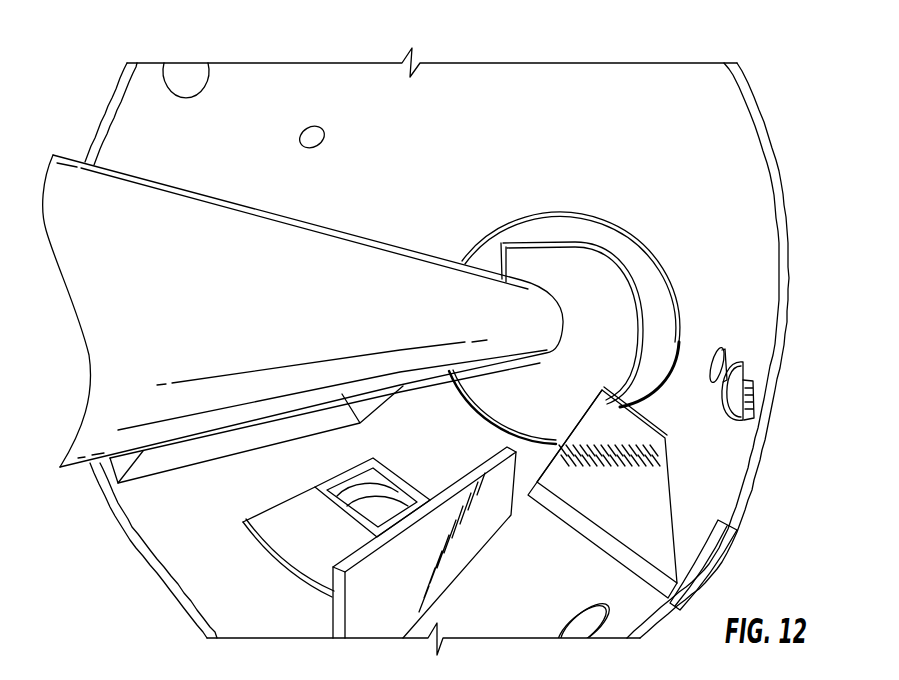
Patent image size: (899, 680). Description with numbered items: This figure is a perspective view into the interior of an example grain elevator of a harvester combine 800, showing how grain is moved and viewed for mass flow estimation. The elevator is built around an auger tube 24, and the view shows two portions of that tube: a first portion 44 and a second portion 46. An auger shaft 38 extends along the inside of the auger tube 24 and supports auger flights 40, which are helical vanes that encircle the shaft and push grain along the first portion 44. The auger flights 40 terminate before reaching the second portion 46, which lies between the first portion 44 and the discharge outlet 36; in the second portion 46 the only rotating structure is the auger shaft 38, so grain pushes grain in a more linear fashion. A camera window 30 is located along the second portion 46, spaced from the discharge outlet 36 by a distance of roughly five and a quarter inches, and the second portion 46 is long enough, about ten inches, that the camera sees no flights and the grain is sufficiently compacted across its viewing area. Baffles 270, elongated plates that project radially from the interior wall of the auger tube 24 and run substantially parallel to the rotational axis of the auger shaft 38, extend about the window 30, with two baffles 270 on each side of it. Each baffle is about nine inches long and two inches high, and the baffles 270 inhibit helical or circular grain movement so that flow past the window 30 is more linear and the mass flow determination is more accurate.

The combine 800 is at (94, 79).
The auger tube 24 is at (797, 229).
The discharge outlet 36 is at (128, 529).
The portion of auger tube 44 is at (657, 238).
The auger flights 40 is at (545, 214).
The auger shaft 38 is at (316, 226).
The second portion of auger tube 46 is at (777, 363).
The camera window 30 is at (373, 506).
The baffles 270 is at (437, 487).